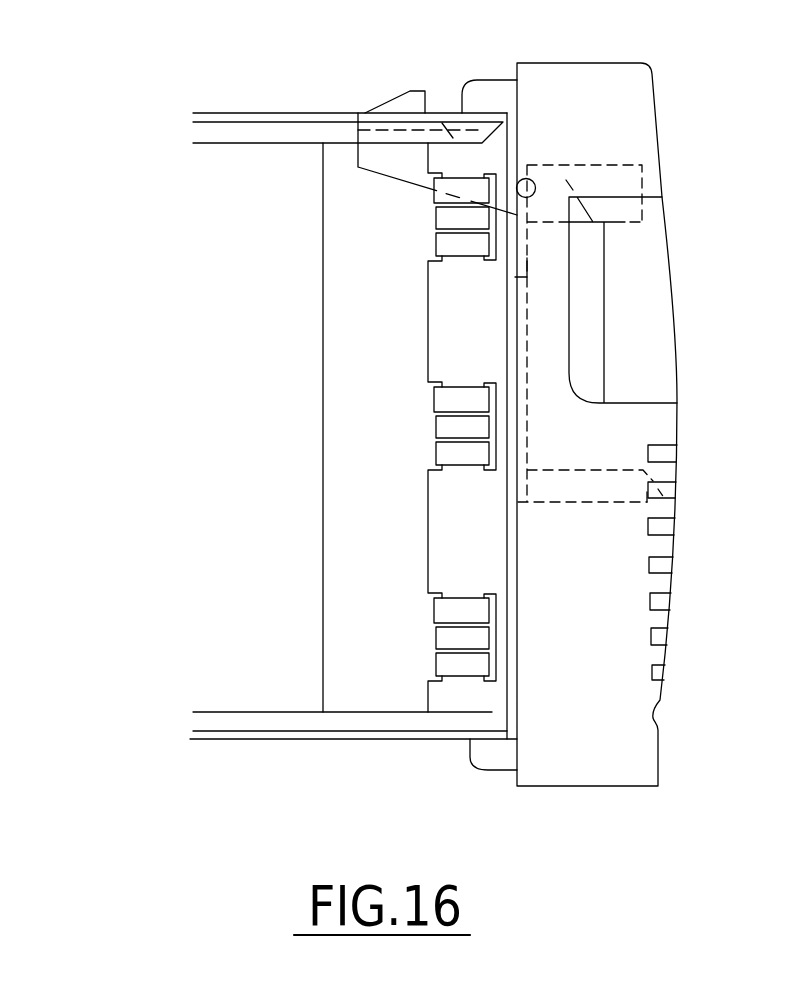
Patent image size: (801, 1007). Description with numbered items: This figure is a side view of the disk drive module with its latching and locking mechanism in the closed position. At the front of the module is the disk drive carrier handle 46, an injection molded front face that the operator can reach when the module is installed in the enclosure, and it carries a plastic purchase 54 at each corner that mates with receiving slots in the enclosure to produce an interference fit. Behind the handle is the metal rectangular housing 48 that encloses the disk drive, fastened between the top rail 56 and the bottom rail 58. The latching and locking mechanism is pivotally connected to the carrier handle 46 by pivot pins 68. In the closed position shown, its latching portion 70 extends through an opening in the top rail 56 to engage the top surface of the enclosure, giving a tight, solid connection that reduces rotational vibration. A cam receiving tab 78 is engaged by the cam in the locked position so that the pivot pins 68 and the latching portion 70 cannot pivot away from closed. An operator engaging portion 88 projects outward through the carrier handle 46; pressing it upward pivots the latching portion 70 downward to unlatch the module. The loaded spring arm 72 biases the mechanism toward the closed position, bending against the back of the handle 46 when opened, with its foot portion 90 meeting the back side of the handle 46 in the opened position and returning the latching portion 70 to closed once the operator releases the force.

The disk drive carrier handle 46 is at (666, 160).
The housing 48 is at (262, 431).
The purchase 54 is at (488, 87).
The top rail 56 is at (277, 98).
The bottom rail 58 is at (272, 739).
The pivot pins 68 is at (529, 179).
The latching portion 70 is at (413, 93).
The loaded spring arm 72 is at (527, 430).
The cam receiving tab 78 is at (522, 258).
The operator engaging portion 88 is at (623, 212).
The foot portion 90 is at (590, 492).